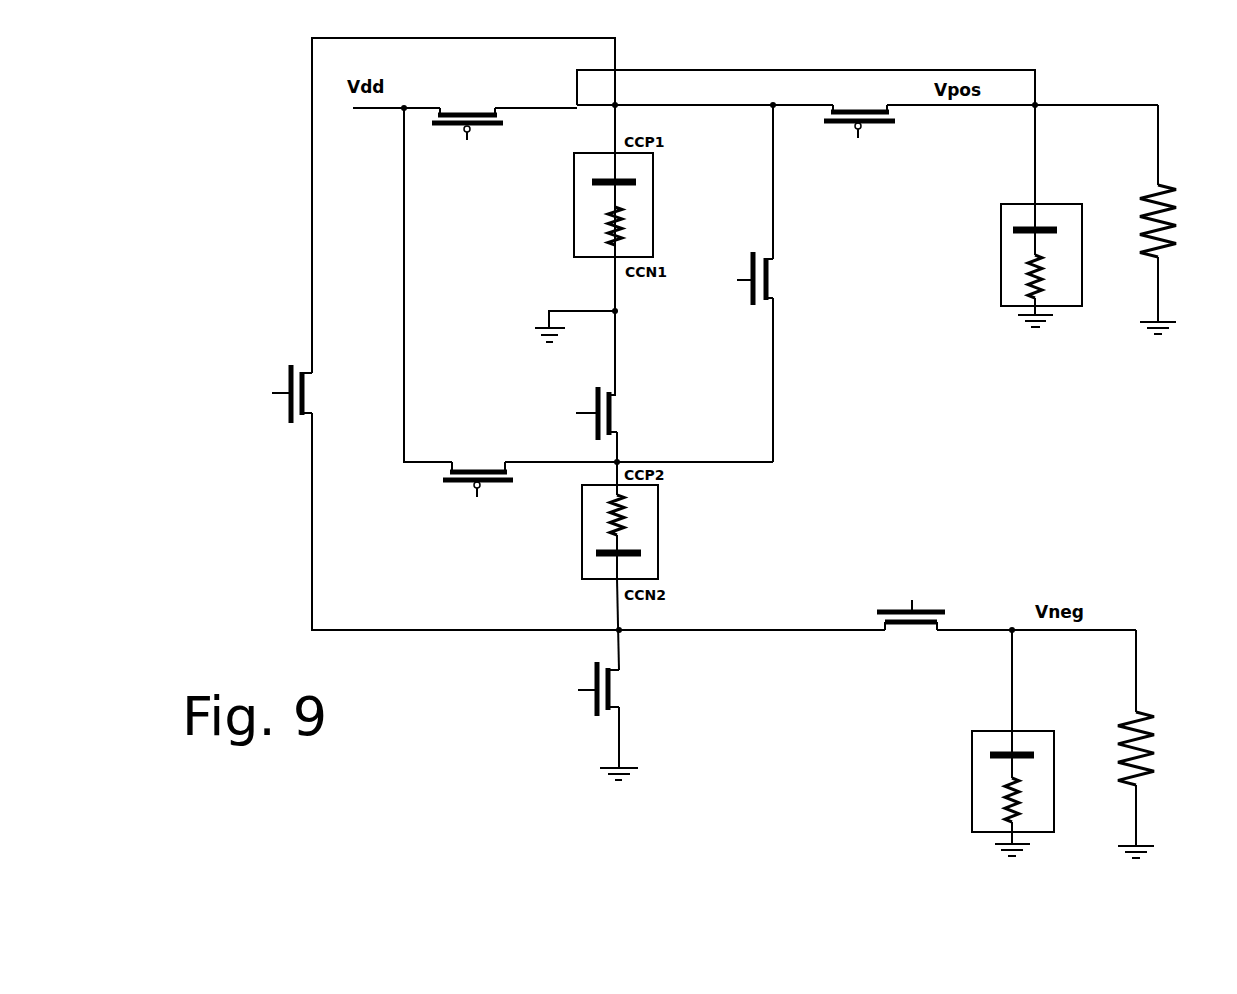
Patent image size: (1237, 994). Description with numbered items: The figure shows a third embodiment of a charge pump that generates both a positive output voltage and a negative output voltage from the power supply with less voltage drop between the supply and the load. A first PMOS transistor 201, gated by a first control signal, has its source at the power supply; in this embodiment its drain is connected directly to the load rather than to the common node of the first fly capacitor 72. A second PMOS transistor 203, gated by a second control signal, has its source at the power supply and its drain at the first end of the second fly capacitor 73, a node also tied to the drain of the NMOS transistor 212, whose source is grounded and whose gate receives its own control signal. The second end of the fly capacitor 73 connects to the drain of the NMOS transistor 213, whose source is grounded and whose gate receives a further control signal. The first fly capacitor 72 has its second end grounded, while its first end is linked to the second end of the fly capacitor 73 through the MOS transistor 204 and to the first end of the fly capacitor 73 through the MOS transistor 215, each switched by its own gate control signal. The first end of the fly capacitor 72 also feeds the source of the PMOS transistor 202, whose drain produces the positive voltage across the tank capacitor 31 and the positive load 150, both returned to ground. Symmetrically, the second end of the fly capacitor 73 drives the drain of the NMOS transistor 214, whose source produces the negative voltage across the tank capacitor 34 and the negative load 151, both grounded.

The first PMOS transistor 201 is at (500, 124).
The PMOS transistor 202 is at (892, 122).
The second PMOS transistor 203 is at (510, 482).
The MOS transistor 204 is at (289, 425).
The NMOS transistor 212 is at (596, 441).
The NMOS transistor 213 is at (596, 706).
The NMOS transistor 214 is at (941, 610).
The MOS transistor 215 is at (751, 306).
The first fly capacitor 72 is at (653, 228).
The second fly capacitor 73 is at (658, 535).
The tank capacitor 31 is at (1080, 204).
The tank capacitor 34 is at (1061, 717).
The positive load 150 is at (1178, 229).
The negative load 151 is at (1152, 756).